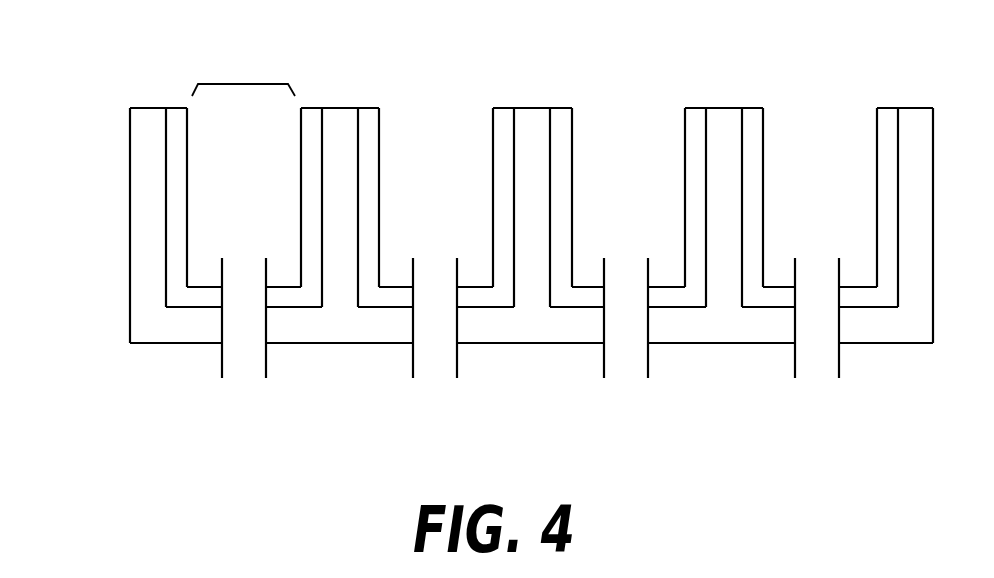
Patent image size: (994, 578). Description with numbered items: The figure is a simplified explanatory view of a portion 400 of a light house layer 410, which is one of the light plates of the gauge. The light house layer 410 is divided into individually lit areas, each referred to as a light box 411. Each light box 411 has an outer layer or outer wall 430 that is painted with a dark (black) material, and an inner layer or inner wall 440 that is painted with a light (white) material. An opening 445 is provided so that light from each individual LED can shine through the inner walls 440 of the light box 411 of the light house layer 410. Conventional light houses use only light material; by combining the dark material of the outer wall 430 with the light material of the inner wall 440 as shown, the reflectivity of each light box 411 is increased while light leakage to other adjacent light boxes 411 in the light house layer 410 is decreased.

The portion 400 is at (127, 47).
The light house layer 410 is at (108, 173).
The light box 411 is at (244, 84).
The outer wall 430 is at (127, 293).
The inner wall 440 is at (590, 139).
The opening 445 is at (223, 266).